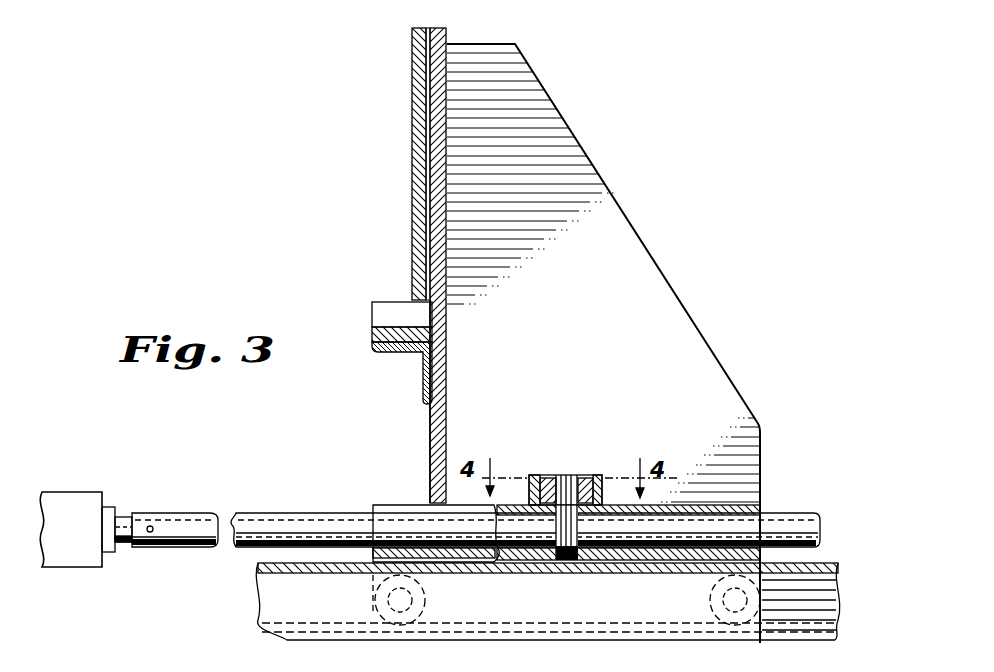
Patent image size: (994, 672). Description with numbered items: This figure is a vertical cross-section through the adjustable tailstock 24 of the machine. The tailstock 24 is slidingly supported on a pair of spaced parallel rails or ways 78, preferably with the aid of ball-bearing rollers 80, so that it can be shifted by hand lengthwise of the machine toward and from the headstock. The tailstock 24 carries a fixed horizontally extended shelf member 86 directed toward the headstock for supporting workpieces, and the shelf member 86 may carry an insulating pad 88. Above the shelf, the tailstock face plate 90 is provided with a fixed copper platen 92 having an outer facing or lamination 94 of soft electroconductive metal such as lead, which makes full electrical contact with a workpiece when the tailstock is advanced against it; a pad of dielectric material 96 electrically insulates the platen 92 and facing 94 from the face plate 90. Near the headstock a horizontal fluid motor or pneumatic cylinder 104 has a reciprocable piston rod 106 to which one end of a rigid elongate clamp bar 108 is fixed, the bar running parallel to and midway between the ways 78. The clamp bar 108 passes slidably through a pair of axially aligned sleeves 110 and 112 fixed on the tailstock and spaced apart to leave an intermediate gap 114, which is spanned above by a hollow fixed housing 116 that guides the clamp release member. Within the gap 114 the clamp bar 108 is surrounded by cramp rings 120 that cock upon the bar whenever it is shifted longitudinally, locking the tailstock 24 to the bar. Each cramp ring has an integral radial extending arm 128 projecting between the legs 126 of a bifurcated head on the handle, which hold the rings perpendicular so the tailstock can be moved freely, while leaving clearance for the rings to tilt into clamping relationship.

The tailstock 24 is at (634, 245).
The rails or ways 78 is at (268, 610).
The ball-bearing rollers 80 is at (374, 605).
The shelf member 86 is at (393, 352).
The insulating pad 88 is at (372, 336).
The tailstock face plate 90 is at (430, 421).
The copper platen 92 is at (428, 30).
The outer facing or lamination 94 is at (418, 29).
The pad of dielectric material 96 is at (438, 30).
The fluid motor or pneumatic cylinder 104 is at (66, 556).
The piston rod 106 is at (128, 546).
The clamp bar 108 is at (190, 550).
The sleeve 110 is at (410, 505).
The sleeve 112 is at (742, 507).
The intermediate gap 114 is at (580, 562).
The hollow fixed housing 116 is at (602, 479).
The cramp rings 120 is at (545, 558).
The legs 126 is at (548, 481).
The extending arm 128 is at (568, 481).